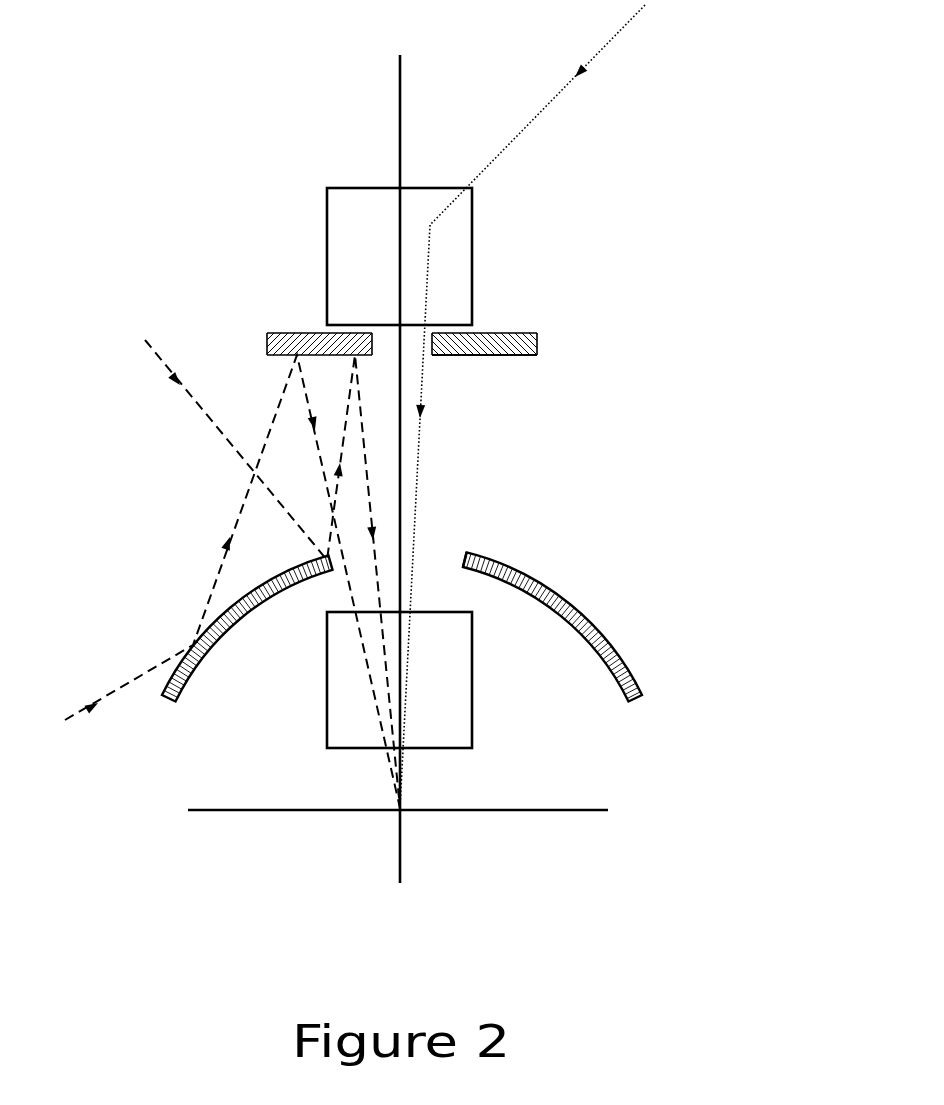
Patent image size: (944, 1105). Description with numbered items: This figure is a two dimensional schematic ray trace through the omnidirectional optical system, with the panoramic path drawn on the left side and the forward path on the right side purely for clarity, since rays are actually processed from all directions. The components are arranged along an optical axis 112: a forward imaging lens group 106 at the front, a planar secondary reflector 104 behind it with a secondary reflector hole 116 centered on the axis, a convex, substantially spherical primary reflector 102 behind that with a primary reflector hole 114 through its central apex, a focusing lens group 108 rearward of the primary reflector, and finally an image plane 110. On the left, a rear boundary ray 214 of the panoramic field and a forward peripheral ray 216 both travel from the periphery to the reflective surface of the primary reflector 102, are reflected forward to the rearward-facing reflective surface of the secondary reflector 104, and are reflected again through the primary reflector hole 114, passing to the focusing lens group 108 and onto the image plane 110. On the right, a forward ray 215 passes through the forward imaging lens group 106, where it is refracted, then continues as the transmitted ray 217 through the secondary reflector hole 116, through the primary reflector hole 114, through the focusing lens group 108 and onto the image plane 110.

The primary reflector 102 is at (533, 578).
The secondary reflector 104 is at (535, 360).
The forward imaging lens group 106 is at (473, 212).
The focusing lens group 108 is at (473, 658).
The image plane 110 is at (588, 810).
The optical axis 112 is at (393, 95).
The primary reflector hole 114 is at (438, 567).
The secondary reflector hole 116 is at (427, 352).
The rear boundary ray 214 is at (137, 677).
The forward ray 215 is at (618, 38).
The ray 216 is at (200, 410).
The transmitted light ray 217 is at (418, 450).